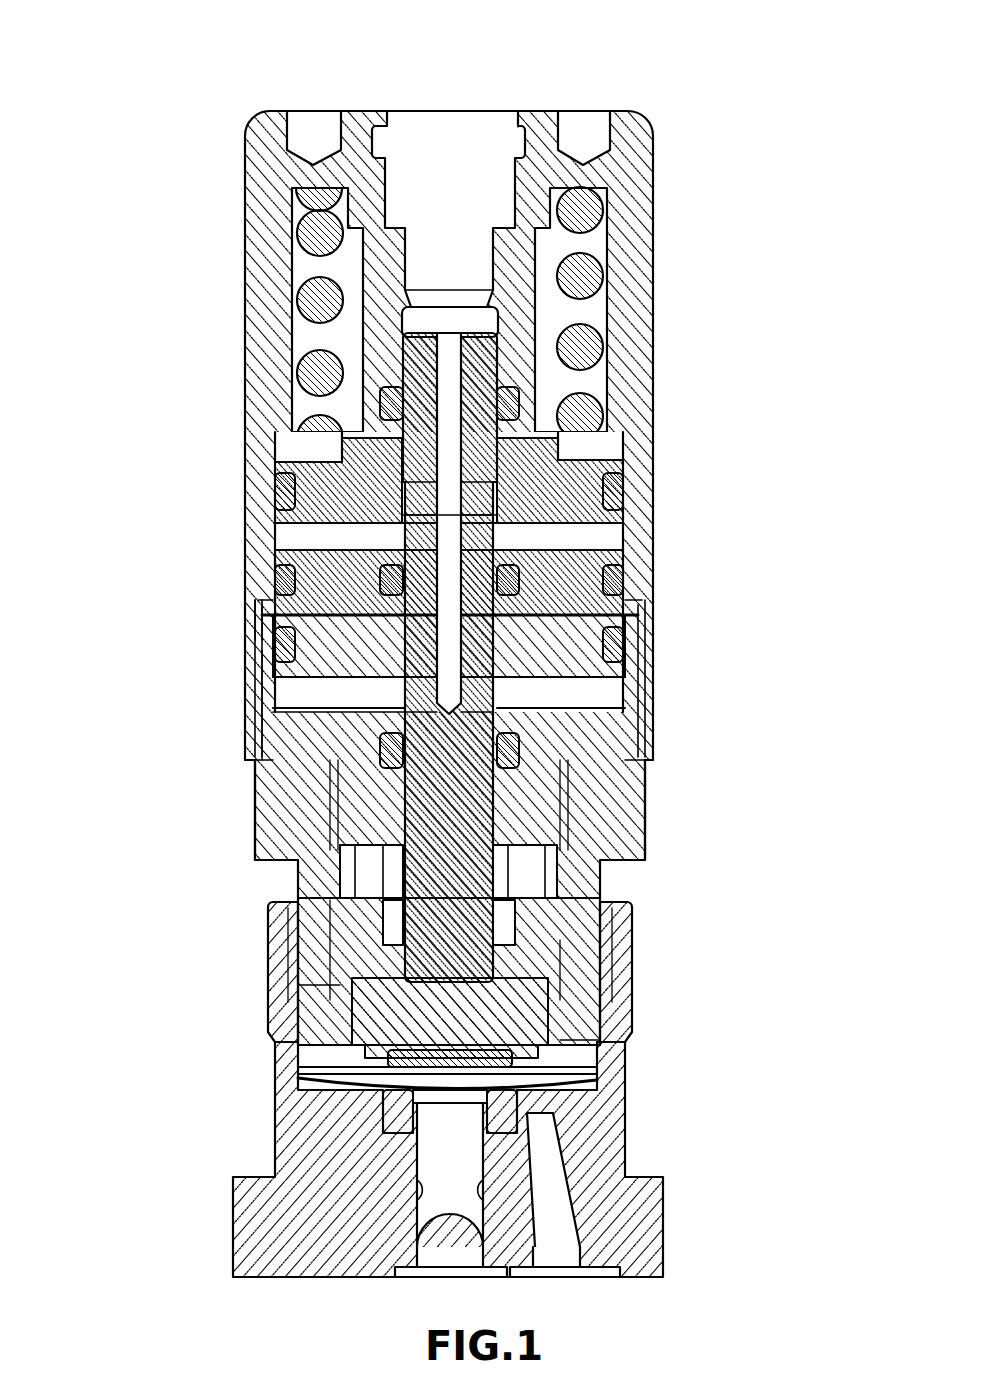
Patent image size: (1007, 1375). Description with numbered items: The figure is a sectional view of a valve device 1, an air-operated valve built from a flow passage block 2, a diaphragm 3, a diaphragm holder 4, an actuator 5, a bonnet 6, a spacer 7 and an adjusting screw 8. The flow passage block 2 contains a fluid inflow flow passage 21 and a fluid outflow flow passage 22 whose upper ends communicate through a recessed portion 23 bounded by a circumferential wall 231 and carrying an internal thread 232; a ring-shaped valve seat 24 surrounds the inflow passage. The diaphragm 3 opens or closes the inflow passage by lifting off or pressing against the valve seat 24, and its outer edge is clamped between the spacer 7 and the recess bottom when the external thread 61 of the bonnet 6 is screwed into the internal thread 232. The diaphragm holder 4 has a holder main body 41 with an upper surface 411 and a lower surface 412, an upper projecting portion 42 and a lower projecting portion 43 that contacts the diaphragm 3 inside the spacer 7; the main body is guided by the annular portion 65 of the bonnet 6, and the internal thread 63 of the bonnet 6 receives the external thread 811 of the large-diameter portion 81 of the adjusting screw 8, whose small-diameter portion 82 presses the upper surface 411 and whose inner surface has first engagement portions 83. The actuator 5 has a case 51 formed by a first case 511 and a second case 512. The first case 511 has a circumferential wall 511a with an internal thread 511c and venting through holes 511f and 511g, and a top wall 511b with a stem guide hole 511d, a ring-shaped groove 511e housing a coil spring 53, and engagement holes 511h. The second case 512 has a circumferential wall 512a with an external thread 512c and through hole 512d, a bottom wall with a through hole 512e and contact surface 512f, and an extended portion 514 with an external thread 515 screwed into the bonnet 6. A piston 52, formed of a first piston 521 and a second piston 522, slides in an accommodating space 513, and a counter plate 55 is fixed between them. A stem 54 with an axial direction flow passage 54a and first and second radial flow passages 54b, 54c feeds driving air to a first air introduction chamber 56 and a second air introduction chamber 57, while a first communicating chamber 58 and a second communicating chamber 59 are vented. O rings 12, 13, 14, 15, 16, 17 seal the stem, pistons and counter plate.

The valve device 1 is at (672, 62).
The flow passage block 2 is at (454, 1159).
The fluid inflow flow passage 21 is at (425, 1235).
The fluid outflow flow passage 22 is at (582, 1230).
The recessed portion 23 is at (540, 1098).
The circumferential wall 231 is at (607, 985).
The internal thread 232 is at (602, 1010).
The valve seat 24 is at (420, 1110).
The diaphragm 3 is at (517, 1105).
The diaphragm holder 4 is at (351, 1081).
The holder main body 41 is at (402, 1060).
The upper surface 411 is at (567, 958).
The lower surface 412 is at (537, 1062).
The upper projecting portion 42 is at (398, 1032).
The lower projecting portion 43 is at (402, 1085).
The actuator 5 is at (668, 357).
The case 51 is at (633, 300).
The first case 511 is at (633, 183).
The circumferential wall 511a is at (628, 525).
The top wall 511b is at (535, 125).
The internal thread 511c is at (600, 688).
The stem guide hole 511d is at (478, 322).
The ring-shaped groove 511e is at (305, 215).
The through hole 511f is at (268, 466).
The through hole 511g is at (262, 590).
The engagement holes 511h is at (296, 135).
The second case 512 is at (625, 740).
The circumferential wall 512a is at (618, 617).
The external thread 512c is at (618, 702).
The through hole 512d is at (258, 622).
The through hole 512e is at (355, 690).
The contact surface 512f is at (425, 705).
The accommodating space 513 is at (622, 540).
The extended portion 514 is at (532, 795).
The external thread 515 is at (390, 745).
The piston 52 is at (570, 470).
The first piston 521 is at (330, 483).
The second piston 522 is at (577, 603).
The coil spring 53 is at (585, 270).
The stem 54 is at (482, 805).
The axial direction flow passage 54a is at (440, 355).
The first radial flow passage 54b is at (405, 800).
The second radial flow passage 54c is at (470, 516).
The counter plate 55 is at (562, 562).
The first air introduction chamber 56 is at (582, 655).
The second air introduction chamber 57 is at (380, 575).
The first communicating chamber 58 is at (285, 465).
The second communicating chamber 59 is at (290, 585).
The bonnet 6 is at (384, 951).
The external thread 61 is at (315, 940).
The internal thread 63 is at (325, 890).
The annular portion 65 is at (567, 1052).
The spacer 7 is at (522, 1077).
The adjusting screw 8 is at (548, 905).
The large-diameter portion 81 is at (545, 920).
The external thread 811 is at (352, 920).
The small-diameter portion 82 is at (352, 985).
The first engagement portions 83 is at (522, 930).
The O ring 12 is at (510, 403).
The O ring 13 is at (615, 488).
The O ring 14 is at (615, 578).
The O ring 15 is at (290, 545).
The O ring 16 is at (615, 643).
The O ring 17 is at (515, 745).